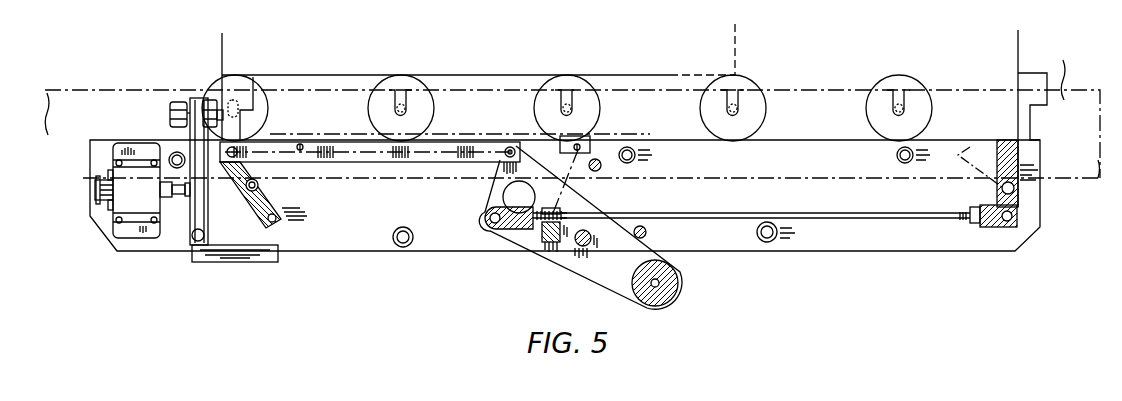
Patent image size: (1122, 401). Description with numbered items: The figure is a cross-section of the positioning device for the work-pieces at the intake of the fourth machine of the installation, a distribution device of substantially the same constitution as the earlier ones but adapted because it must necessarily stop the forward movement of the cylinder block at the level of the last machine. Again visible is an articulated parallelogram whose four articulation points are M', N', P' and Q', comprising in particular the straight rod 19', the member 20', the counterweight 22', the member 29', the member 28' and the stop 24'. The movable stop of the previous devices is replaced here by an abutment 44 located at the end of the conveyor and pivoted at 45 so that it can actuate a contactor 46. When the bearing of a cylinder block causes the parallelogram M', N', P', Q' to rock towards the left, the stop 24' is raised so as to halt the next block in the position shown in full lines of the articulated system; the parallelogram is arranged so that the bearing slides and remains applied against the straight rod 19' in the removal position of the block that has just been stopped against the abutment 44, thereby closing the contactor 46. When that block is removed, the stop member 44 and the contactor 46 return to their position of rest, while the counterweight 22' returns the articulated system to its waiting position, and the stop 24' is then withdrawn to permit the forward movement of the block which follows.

The abutment 44 is at (190, 132).
The pivot 45 is at (204, 235).
The contactor 46 is at (142, 210).
The straight rod 19' is at (405, 172).
The parallelogram member 29' is at (282, 195).
The parallelogram member 20' is at (580, 227).
The counterweight 22' is at (681, 283).
The stop 24' is at (1022, 183).
The parallelogram member 28' is at (770, 202).
The parallelogram pivot point M' is at (248, 108).
The parallelogram pivot point N' is at (514, 142).
The parallelogram pivot point P' is at (290, 231).
The parallelogram pivot point Q' is at (556, 201).